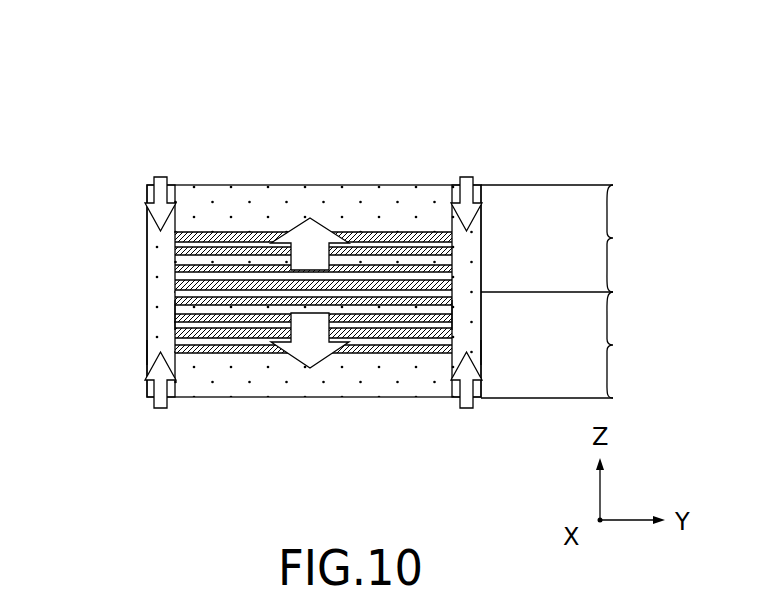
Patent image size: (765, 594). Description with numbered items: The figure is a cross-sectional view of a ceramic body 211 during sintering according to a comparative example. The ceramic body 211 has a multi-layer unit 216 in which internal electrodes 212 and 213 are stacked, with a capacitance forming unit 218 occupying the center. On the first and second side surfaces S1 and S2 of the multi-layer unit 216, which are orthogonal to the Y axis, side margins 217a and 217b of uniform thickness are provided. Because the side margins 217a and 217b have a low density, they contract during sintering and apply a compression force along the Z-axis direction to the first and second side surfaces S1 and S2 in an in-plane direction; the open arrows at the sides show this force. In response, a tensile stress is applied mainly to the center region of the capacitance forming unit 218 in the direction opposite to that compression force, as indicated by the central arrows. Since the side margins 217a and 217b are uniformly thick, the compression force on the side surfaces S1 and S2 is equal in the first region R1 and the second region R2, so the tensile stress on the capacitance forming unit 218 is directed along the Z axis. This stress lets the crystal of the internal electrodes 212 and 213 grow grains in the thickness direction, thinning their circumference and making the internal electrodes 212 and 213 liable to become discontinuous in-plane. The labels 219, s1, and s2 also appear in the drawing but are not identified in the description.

The ceramic body 211 is at (476, 88).
The internal electrode 212 is at (193, 318).
The internal electrode 213 is at (372, 320).
The multi-layer unit 216 is at (330, 150).
The side margin 217a is at (160, 270).
The side margin 217b is at (463, 270).
The capacitance forming unit 218 is at (248, 338).
The cover layer 219 is at (431, 386).
The first side surface S1 is at (160, 315).
The first side surface s1 is at (152, 352).
The second side surface S2 is at (452, 315).
The second side surface s2 is at (481, 350).
The first region R1 is at (565, 345).
The second region R2 is at (565, 238).